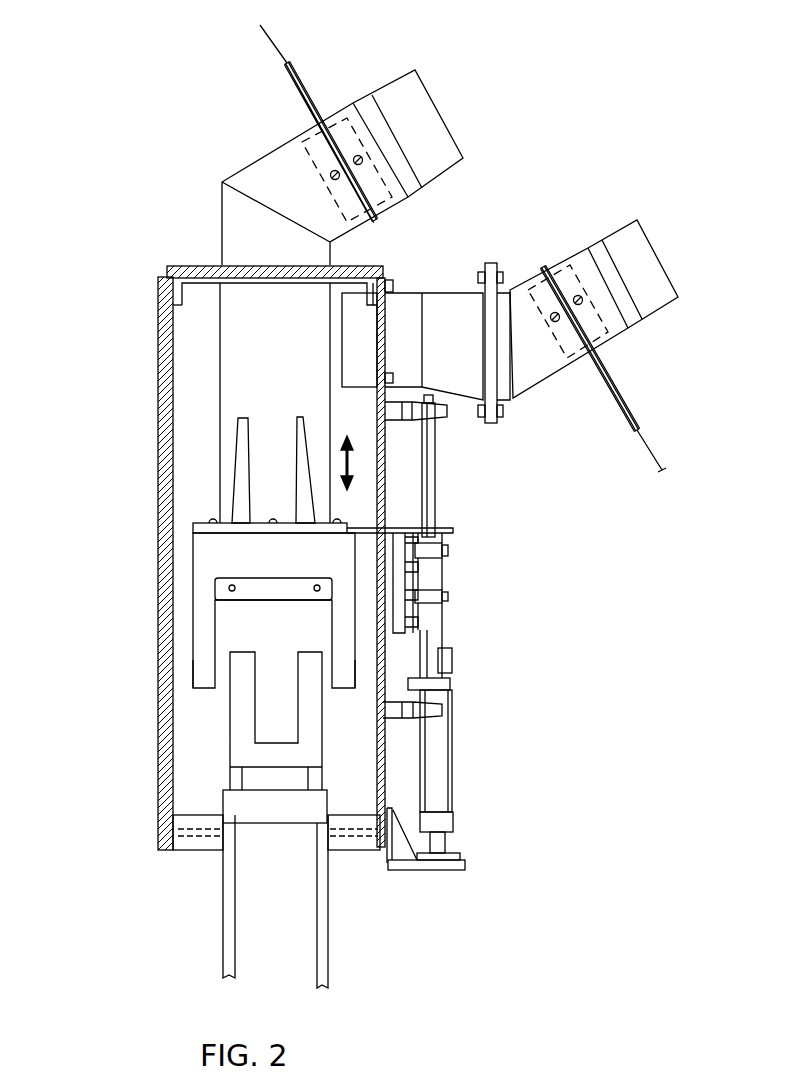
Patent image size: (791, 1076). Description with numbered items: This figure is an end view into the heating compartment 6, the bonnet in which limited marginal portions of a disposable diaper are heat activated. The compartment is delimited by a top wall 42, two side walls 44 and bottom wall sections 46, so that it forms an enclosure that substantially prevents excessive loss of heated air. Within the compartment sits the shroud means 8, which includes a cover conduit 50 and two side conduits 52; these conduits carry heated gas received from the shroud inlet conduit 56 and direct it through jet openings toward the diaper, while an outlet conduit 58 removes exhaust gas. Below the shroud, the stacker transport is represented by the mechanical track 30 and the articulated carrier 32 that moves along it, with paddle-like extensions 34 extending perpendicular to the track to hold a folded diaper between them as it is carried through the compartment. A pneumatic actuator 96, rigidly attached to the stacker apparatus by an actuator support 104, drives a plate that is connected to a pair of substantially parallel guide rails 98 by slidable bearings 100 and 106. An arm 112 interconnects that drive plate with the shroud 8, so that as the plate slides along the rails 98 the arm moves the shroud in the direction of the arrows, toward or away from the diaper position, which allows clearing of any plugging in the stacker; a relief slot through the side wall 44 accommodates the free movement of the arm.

The heating compartment 6 is at (92, 319).
The shroud means 8 is at (203, 587).
The mechanical track 30 is at (277, 810).
The articulated carrying means 32 is at (232, 771).
The paddle-like extensions 34 is at (257, 690).
The top wall 42 is at (197, 262).
The side walls 44 is at (157, 460).
The bottom wall sections 46 is at (200, 852).
The cover conduit means 50 is at (200, 520).
The side conduit means 52 is at (210, 690).
The shroud inlet conduit 56 is at (282, 143).
The outlet conduit 58 is at (623, 222).
The pneumatic actuator 96 is at (452, 778).
The guide rails 98 is at (437, 472).
The slidable bearing 100 is at (443, 610).
The actuator support 104 is at (437, 868).
The slidable bearing 106 is at (440, 712).
The arm 112 is at (363, 523).